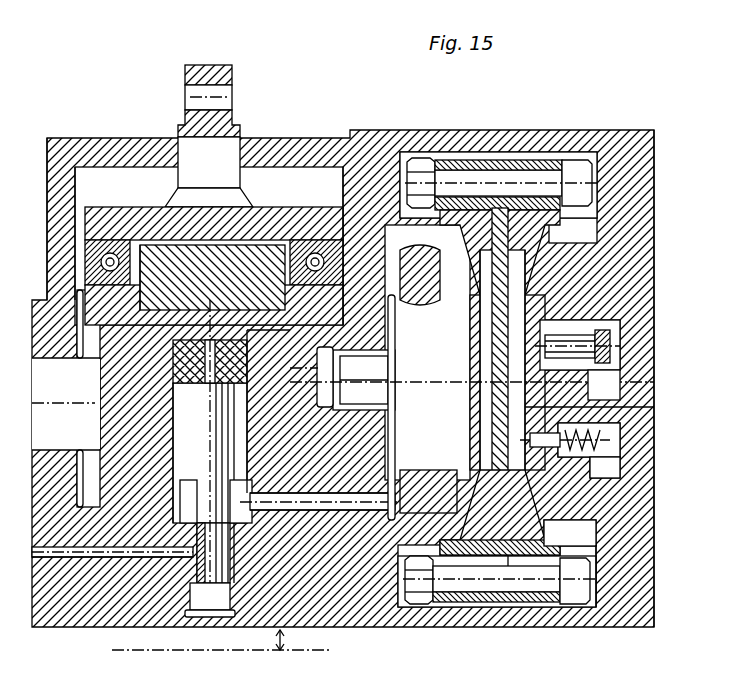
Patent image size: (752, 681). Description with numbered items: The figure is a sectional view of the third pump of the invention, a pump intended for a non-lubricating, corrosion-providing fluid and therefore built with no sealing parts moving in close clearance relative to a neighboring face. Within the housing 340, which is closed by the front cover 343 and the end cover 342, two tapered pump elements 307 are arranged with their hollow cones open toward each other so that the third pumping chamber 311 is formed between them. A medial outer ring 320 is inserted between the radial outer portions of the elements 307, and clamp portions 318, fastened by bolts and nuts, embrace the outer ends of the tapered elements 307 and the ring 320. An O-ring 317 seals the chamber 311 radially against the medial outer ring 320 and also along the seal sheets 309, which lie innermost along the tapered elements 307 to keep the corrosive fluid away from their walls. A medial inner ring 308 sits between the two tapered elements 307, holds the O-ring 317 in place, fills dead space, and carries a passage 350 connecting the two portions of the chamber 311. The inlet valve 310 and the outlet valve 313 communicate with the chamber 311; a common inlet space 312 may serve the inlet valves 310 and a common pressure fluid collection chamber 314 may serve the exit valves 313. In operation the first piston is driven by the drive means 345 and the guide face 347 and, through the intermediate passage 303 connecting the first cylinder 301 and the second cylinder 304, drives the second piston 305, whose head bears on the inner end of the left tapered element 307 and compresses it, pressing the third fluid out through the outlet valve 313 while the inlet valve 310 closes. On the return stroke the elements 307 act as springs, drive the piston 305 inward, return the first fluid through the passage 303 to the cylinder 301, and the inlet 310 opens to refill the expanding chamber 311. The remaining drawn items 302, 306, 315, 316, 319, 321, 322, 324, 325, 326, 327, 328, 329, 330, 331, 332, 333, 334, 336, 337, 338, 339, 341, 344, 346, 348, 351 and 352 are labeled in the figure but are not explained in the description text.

The first cylinder 301 is at (240, 515).
The housing block 302 is at (235, 443).
The intermediate passage 303 is at (320, 498).
The second cylinder 304 is at (392, 527).
The second piston 305 is at (393, 407).
The gear bore 306 is at (488, 420).
The tapered pump element 307 is at (550, 250).
The medial inner ring 308 is at (500, 415).
The seal sheet 309 is at (545, 275).
The inlet valve 310 is at (530, 300).
The third pumping chamber 311 is at (615, 412).
The common inlet space 312 is at (605, 392).
The outlet valve 313 is at (590, 428).
The common pressure fluid collection chamber 314 is at (605, 468).
The housing wall 315 is at (640, 315).
The check valve 316 is at (600, 330).
The O-ring 317 is at (540, 222).
The clamp portion 318 is at (565, 198).
The bolt cavity 319 is at (540, 205).
The medial outer ring 320 is at (500, 590).
The shaft end 321 is at (520, 600).
The valve block 322 is at (352, 410).
The shoulder 324 is at (318, 425).
The cap 325 is at (320, 385).
The sleeve 326 is at (225, 565).
The end cap 327 is at (230, 602).
The channel wall 328 is at (200, 560).
The channel 329 is at (130, 555).
The lower cavity 330 is at (440, 600).
The axis line 331 is at (282, 652).
The offset dimension 332 is at (298, 645).
The rod 333 is at (211, 450).
The bore 334 is at (192, 453).
The gear block 336 is at (272, 294).
The block wall 337 is at (225, 310).
The ball bearing 338 is at (312, 255).
The plate 339 is at (150, 225).
The housing 340 is at (355, 150).
The input shaft 341 is at (235, 122).
The end cover 342 is at (645, 522).
The front cover 343 is at (58, 150).
The pin 344 is at (95, 478).
The drive means 345 is at (82, 433).
The cavity 346 is at (88, 370).
The guide face 347 is at (345, 295).
The pocket 348 is at (560, 475).
The passage 350 is at (490, 385).
The lower flange 351 is at (580, 540).
The wall 352 is at (100, 190).